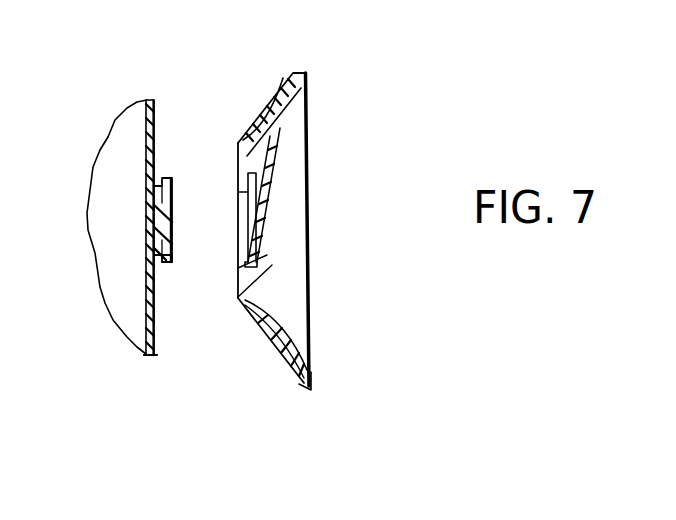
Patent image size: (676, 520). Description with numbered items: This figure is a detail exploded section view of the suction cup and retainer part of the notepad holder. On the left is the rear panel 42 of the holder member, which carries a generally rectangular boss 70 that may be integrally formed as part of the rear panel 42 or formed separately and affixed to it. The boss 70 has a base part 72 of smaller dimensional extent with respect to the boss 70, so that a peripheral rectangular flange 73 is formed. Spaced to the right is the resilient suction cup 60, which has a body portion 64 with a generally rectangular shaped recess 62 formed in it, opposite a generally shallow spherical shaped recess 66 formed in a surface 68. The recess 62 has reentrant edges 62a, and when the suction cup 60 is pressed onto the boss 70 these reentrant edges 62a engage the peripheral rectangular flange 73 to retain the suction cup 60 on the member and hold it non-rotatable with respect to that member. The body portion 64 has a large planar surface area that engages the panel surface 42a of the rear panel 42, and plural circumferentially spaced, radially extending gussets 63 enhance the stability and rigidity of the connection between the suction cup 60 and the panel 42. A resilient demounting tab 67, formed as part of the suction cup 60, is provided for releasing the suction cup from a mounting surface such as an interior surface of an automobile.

The rear panel 42 is at (152, 100).
The panel surface 42a is at (155, 325).
The resilient suction cup 60 is at (342, 269).
The generally rectangular shaped recess 62 is at (238, 220).
The reentrant edges 62a is at (262, 221).
The gussets 63 is at (280, 98).
The body portion 64 is at (238, 299).
The shallow spherical shaped recess 66 is at (283, 140).
The resilient demounting tab 67 is at (311, 385).
The surface 68 is at (310, 302).
The generally rectangular boss 70 is at (172, 205).
The base part 72 is at (150, 204).
The peripheral rectangular flange 73 is at (168, 264).